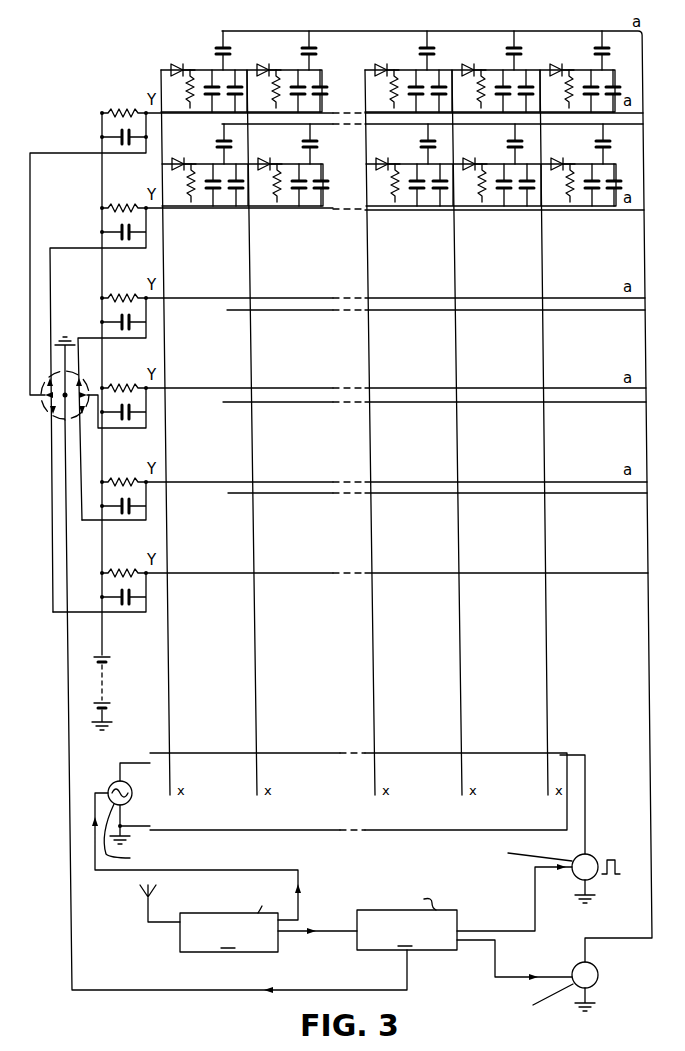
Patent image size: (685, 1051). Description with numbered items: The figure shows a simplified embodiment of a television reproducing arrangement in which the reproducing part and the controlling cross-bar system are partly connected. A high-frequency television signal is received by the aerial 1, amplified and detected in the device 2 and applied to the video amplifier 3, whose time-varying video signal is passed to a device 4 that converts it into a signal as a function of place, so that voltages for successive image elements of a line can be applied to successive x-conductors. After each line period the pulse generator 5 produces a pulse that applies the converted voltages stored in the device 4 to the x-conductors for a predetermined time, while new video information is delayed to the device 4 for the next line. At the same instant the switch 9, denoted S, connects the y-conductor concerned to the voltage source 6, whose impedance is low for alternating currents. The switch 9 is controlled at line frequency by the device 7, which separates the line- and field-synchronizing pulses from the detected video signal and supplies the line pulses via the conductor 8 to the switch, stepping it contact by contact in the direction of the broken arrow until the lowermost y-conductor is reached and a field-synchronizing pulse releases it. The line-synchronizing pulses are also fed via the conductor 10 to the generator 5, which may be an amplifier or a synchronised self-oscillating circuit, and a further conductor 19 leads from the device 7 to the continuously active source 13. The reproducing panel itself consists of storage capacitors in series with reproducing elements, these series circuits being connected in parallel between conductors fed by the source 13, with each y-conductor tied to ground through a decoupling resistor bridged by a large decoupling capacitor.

The aerial 1 is at (141, 905).
The amplifying and detecting device 2 is at (219, 914).
The video amplifier 3 is at (110, 786).
The time-to-position converting device 4 is at (315, 830).
The pulse generator 5 is at (575, 860).
The voltage source 6 is at (109, 696).
The synchronizing signal separator device 7 is at (367, 907).
The conductor 8 is at (326, 990).
The rotary switch 9 is at (56, 406).
The conductor 10 is at (493, 931).
The continuously active source 13 is at (576, 966).
The connection line 19 is at (521, 970).